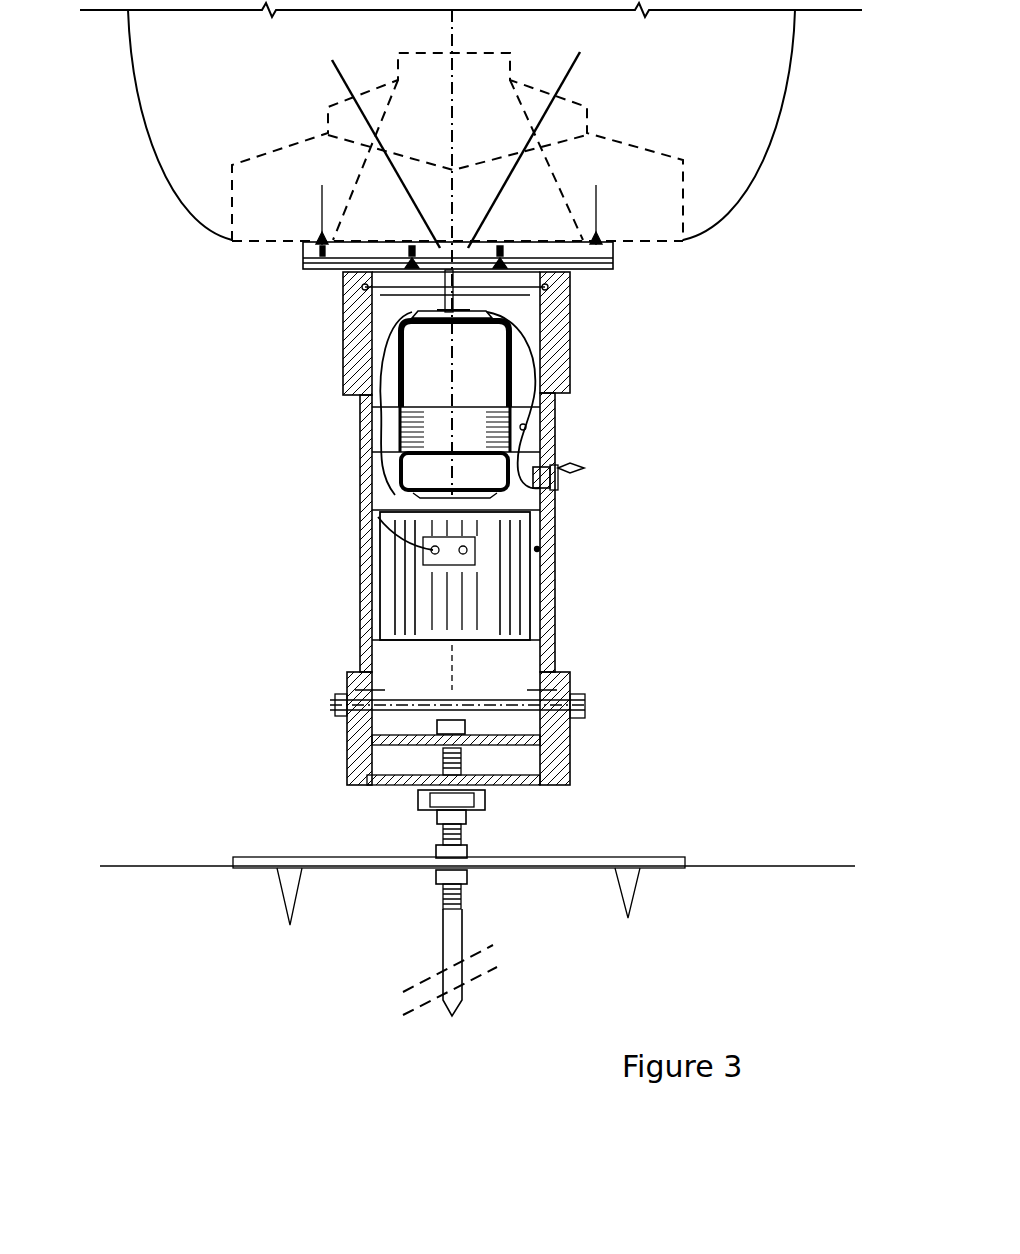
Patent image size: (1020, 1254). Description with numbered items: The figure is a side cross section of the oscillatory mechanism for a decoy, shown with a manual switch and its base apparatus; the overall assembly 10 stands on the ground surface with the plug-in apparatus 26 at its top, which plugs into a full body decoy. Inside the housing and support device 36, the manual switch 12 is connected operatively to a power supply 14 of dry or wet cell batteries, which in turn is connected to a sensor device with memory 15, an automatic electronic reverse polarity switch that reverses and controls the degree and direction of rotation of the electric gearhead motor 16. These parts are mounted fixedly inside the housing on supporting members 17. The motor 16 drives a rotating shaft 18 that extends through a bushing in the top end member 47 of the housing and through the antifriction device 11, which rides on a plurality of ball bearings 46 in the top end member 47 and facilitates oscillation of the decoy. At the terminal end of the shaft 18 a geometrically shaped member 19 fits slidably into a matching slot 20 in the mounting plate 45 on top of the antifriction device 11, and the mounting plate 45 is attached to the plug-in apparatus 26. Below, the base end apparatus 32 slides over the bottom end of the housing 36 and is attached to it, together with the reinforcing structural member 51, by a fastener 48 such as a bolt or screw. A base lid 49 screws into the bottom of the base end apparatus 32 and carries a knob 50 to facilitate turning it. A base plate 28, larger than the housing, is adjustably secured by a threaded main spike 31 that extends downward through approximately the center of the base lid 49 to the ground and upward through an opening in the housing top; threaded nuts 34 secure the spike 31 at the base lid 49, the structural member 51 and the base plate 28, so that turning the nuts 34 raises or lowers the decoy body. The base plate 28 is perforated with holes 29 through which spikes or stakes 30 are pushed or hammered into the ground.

The antenna assembly 10 is at (215, 143).
The antifriction device 11 is at (573, 292).
The manual switch 12 is at (597, 468).
The power supply 14 is at (540, 548).
The sensor device with memory 15 is at (448, 558).
The electric gearhead motor 16 is at (472, 378).
The supporting members 17 is at (533, 445).
The rotating shaft 18 is at (472, 297).
The geometrically shaped member 19 is at (580, 52).
The matching slot 20 is at (332, 60).
The plug-in apparatus 26 is at (633, 192).
The base plate 28 is at (555, 868).
The holes 29 is at (287, 857).
The spikes or stakes 30 is at (640, 857).
The threaded main spike 31 is at (440, 933).
The base end apparatus 32 is at (575, 748).
The threaded nuts 34 is at (433, 847).
The housing and support device 36 is at (557, 500).
The mounting plate 45 is at (300, 258).
The ball bearings 46 is at (350, 287).
The top end member 47 is at (392, 292).
The fastener 48 is at (327, 710).
The base lid 49 is at (520, 792).
The knob 50 is at (487, 815).
The structural member 51 is at (540, 735).